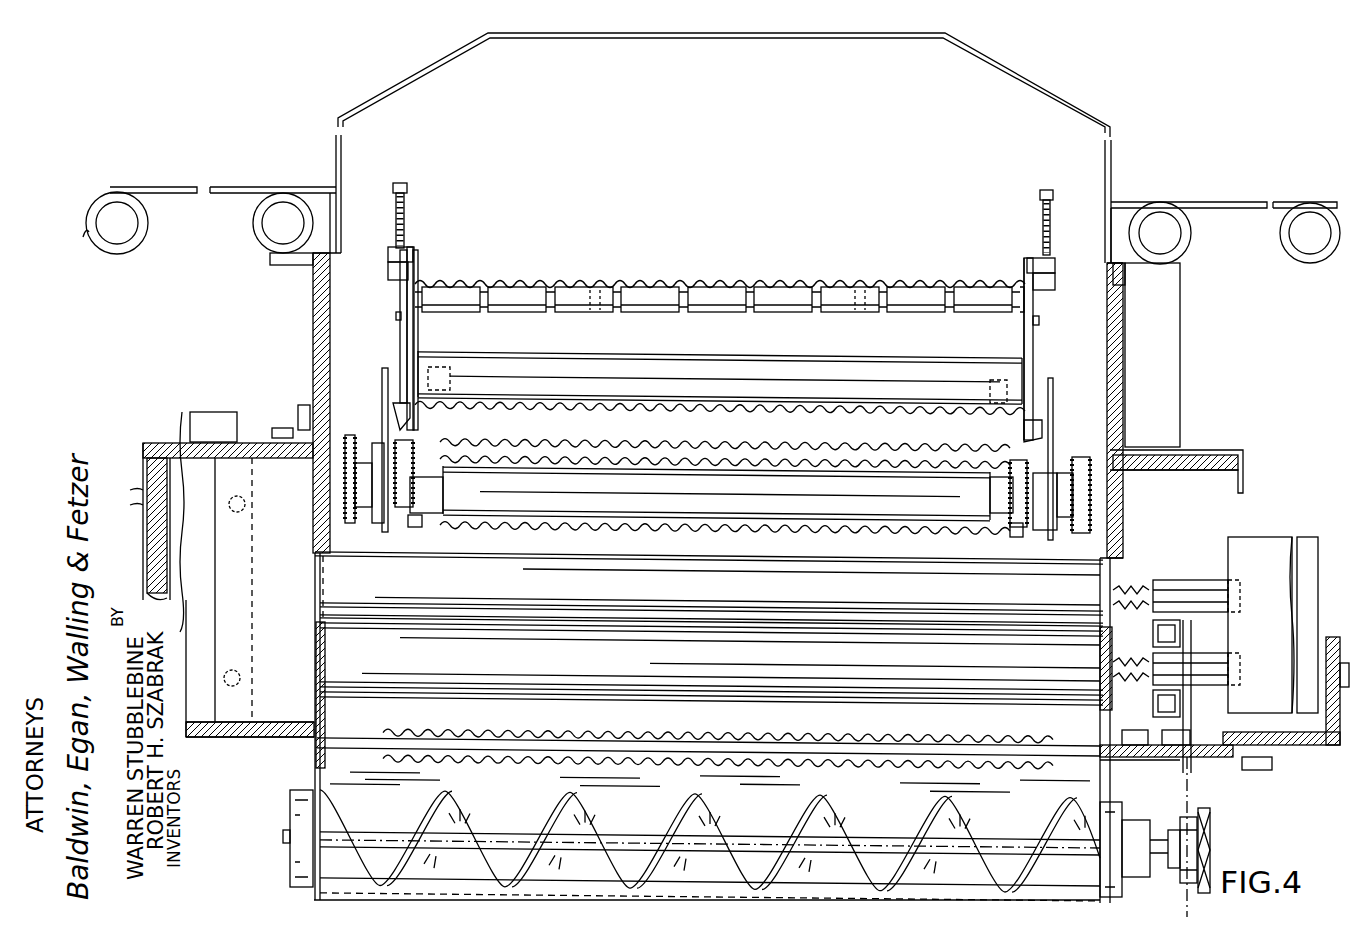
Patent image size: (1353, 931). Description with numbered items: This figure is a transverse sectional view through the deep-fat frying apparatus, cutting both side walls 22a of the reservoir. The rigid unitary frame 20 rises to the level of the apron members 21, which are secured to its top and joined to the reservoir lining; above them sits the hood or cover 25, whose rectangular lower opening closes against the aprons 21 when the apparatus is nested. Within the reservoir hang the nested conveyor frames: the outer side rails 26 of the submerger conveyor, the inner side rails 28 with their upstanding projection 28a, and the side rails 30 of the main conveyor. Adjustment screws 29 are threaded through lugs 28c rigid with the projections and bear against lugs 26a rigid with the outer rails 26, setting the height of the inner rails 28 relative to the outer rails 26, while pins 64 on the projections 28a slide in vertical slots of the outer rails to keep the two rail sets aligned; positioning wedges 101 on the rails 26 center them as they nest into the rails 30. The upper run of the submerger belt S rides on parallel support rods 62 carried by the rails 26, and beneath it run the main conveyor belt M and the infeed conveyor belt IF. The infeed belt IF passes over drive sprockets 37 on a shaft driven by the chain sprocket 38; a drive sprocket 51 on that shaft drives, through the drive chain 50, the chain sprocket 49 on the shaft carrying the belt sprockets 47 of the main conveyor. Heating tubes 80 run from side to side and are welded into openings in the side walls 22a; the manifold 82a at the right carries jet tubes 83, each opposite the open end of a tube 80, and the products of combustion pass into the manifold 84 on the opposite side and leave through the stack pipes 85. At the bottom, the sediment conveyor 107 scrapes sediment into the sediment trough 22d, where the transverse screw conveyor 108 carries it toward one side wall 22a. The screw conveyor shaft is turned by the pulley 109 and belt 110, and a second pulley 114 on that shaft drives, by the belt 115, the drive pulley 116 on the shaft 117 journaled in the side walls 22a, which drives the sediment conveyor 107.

The hood 25 is at (890, 38).
The apron members 21 is at (180, 187).
The frame 20 is at (146, 231).
The adjustment screws 29 is at (406, 211).
The lugs 28c is at (390, 250).
The lugs 26a is at (388, 270).
The upstanding projection 28a is at (418, 264).
The outer side rails 26 is at (400, 299).
The pins 64 is at (396, 315).
The inner side rails 28 is at (416, 348).
The side rails 30 is at (386, 369).
The positioning wedges 101 is at (394, 405).
The chain sprocket 49 is at (348, 438).
The belt sprockets 47 is at (411, 443).
The drive chain 50 is at (347, 464).
The drive sprocket 51 is at (350, 492).
The side walls 22a is at (313, 530).
The manifold 84 is at (300, 566).
The drive sprockets 37 is at (420, 530).
The chain sprocket 38 is at (1083, 457).
The stack pipes 85 is at (210, 413).
The support rods 62 is at (602, 290).
The submerger belt S is at (657, 280).
The main conveyor belt M is at (752, 445).
The infeed conveyor belt IF is at (854, 457).
The tubes 80 is at (956, 600).
The sediment conveyor 107 is at (921, 734).
The sediment trough 22d is at (761, 816).
The screw conveyor 108 is at (845, 812).
The manifold 82a is at (1269, 538).
The jet tubes 83 is at (1194, 567).
The shaft 117 is at (1158, 765).
The drive pulley 116 is at (1191, 770).
The belt 115 is at (1191, 802).
The pulley 109 is at (1211, 836).
The pulley 114 is at (1178, 868).
The belt 110 is at (1194, 895).